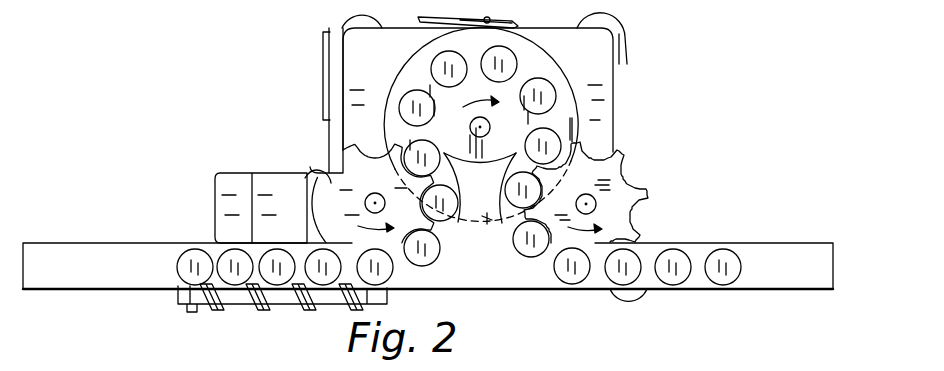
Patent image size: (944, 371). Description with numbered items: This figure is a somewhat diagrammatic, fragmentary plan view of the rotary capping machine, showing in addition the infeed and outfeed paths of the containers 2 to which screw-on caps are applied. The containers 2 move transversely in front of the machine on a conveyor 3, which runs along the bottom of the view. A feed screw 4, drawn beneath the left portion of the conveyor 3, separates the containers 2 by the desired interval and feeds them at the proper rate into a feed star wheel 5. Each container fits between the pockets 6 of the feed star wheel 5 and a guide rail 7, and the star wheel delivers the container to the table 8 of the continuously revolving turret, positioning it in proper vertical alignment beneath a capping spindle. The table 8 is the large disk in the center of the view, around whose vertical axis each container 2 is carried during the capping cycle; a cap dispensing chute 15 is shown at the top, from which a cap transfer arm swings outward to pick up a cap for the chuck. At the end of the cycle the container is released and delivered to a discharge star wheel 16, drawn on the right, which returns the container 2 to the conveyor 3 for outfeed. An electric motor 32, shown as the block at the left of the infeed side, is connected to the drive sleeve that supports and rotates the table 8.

The containers 2 is at (190, 249).
The conveyor 3 is at (82, 276).
The feed screw 4 is at (255, 310).
The feed star wheel 5 is at (322, 177).
The pockets 6 is at (323, 202).
The guide rail 7 is at (448, 229).
The table 8 is at (558, 70).
The cap dispensing chute 15 is at (517, 28).
The discharge star wheel 16 is at (648, 194).
The electric motor 32 is at (222, 202).